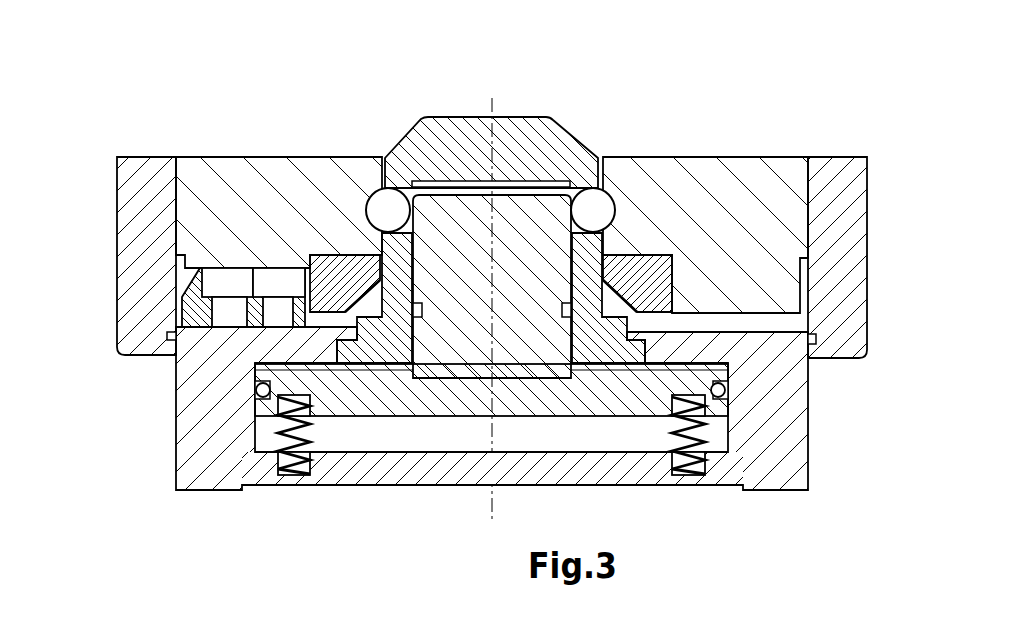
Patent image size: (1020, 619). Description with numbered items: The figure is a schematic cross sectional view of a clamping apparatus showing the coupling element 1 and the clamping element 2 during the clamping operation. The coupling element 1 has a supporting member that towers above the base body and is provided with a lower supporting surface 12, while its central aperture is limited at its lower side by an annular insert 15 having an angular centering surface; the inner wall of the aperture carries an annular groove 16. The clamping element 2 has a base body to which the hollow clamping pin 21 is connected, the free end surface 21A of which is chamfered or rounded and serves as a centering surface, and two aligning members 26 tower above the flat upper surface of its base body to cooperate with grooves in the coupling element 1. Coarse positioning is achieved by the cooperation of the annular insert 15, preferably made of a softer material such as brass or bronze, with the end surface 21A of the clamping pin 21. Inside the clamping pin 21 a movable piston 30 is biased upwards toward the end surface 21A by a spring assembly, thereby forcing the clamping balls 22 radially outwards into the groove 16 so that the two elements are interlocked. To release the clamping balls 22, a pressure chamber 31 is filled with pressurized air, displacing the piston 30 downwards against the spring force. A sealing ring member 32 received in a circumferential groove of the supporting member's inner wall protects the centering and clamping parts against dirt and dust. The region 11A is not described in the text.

The coupling element 1 is at (796, 83).
The clamping element 2 is at (160, 466).
The housing 11A is at (108, 287).
The lower supporting surface 12 is at (149, 378).
The annular insert 15 is at (650, 287).
The annular groove 16 is at (362, 190).
The clamping pin 21 is at (428, 140).
The free end surface 21A is at (606, 121).
The clamping balls 22 is at (593, 207).
The aligning members 26 is at (195, 315).
The piston 30 is at (462, 362).
The pressure chamber 31 is at (378, 368).
The sealing ring member 32 is at (824, 354).